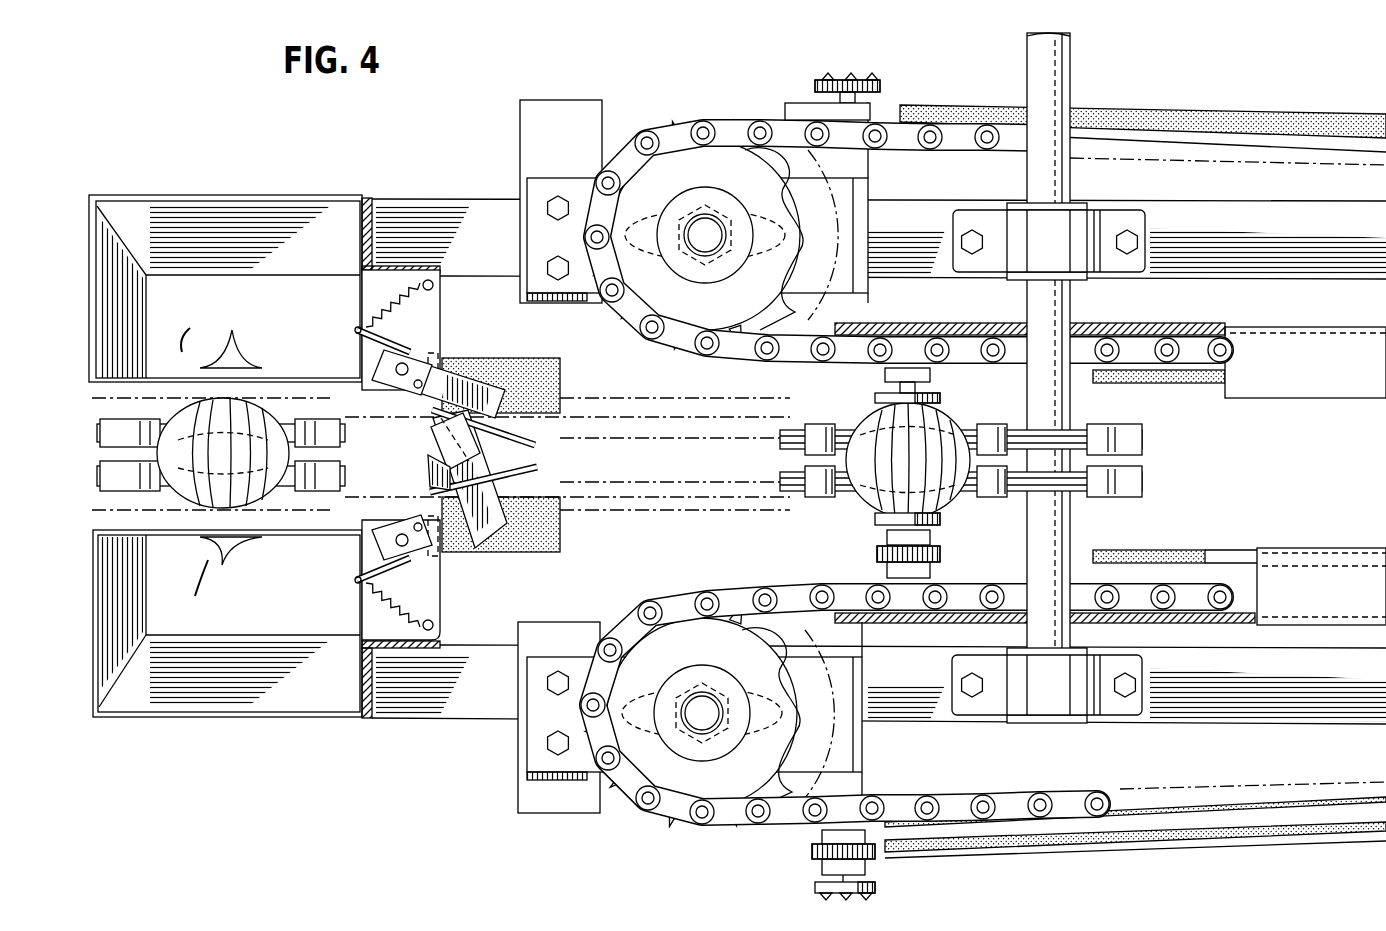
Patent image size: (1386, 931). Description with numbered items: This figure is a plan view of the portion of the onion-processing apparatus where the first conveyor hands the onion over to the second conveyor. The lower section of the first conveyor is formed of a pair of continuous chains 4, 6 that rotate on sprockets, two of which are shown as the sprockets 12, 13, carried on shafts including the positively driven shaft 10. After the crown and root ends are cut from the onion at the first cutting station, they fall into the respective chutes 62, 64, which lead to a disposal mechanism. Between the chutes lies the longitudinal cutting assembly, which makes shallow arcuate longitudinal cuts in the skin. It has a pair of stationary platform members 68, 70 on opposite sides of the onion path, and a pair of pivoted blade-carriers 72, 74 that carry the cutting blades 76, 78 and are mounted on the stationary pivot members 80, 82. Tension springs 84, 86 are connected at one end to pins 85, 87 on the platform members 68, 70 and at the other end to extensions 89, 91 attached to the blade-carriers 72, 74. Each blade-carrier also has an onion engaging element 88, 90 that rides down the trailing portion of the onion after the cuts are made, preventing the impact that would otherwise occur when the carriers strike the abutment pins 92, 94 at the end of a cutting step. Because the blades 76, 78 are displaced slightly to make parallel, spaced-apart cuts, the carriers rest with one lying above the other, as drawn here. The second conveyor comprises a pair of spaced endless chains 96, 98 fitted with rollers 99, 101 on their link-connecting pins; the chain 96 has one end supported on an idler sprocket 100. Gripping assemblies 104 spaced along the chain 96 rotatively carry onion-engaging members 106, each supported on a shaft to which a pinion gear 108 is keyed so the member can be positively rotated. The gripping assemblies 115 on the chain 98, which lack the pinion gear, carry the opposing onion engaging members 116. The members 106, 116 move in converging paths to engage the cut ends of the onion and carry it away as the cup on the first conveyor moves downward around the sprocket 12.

The continuous chain 4 is at (325, 484).
The continuous chain 6 is at (328, 440).
The shaft 10 is at (1037, 542).
The sprocket 12 is at (1075, 485).
The sprocket 13 is at (1073, 437).
The chute 62 is at (271, 326).
The chute 64 is at (271, 601).
The stationary platform member 68 is at (433, 588).
The stationary platform member 70 is at (433, 298).
The pivoted blade-carrier 72 is at (510, 502).
The pivoted blade-carrier 74 is at (473, 378).
The cutting blade 76 is at (430, 447).
The cutting blade 78 is at (430, 462).
The stationary pivot member 80 is at (408, 545).
The stationary pivot member 82 is at (408, 365).
The tension spring 84 is at (380, 602).
The pin 85 is at (433, 625).
The tension spring 86 is at (408, 306).
The pin 87 is at (423, 286).
The onion engaging element 88 is at (533, 442).
The extension 89 is at (367, 565).
The onion engaging element 90 is at (523, 467).
The extension 91 is at (365, 340).
The abutment pin 92 is at (417, 525).
The abutment pin 94 is at (415, 387).
The endless chain 96 is at (655, 815).
The endless chain 98 is at (630, 330).
The roller 99 is at (725, 832).
The idler sprocket 100 is at (717, 656).
The roller 101 is at (750, 358).
The gripping assembly 104 is at (950, 546).
The onion-engaging member 106 is at (938, 520).
The pinion gear 108 is at (940, 557).
The gripping assembly 115 is at (940, 379).
The onion engaging member 116 is at (883, 90).